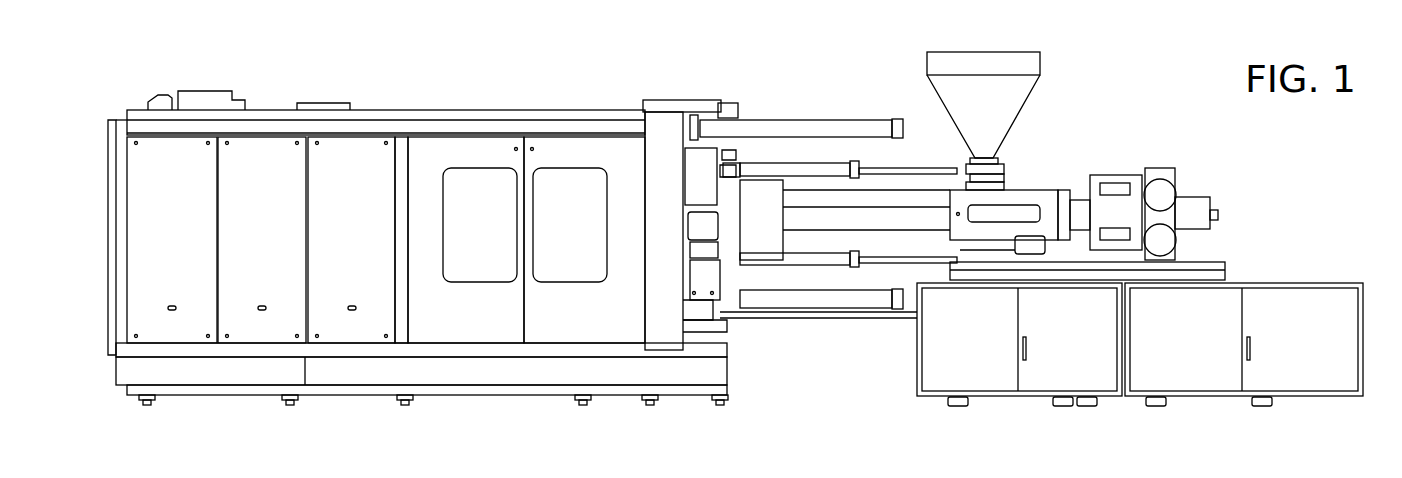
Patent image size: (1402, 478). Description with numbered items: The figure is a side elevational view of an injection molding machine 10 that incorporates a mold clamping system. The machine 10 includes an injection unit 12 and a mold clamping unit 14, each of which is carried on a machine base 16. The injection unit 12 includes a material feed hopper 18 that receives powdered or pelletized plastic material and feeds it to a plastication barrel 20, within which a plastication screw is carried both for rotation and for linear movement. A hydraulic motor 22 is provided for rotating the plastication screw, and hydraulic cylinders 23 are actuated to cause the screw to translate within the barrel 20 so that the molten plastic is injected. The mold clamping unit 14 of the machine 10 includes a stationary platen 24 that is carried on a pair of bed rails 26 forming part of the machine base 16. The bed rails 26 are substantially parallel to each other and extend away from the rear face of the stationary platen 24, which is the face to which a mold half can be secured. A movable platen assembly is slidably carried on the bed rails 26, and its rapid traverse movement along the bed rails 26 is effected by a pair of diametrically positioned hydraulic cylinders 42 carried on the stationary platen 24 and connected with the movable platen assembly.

The injection molding machine 10 is at (797, 61).
The injection unit 12 is at (1108, 100).
The mold clamping unit 14 is at (294, 80).
The machine base 16 is at (768, 382).
The material feed hopper 18 is at (1018, 66).
The plastication barrel 20 is at (873, 200).
The hydraulic motor 22 is at (1165, 175).
The hydraulic cylinders 23 is at (1037, 200).
The stationary platen 24 is at (680, 102).
The bed rails 26 is at (553, 358).
The hydraulic cylinders 42 is at (797, 122).